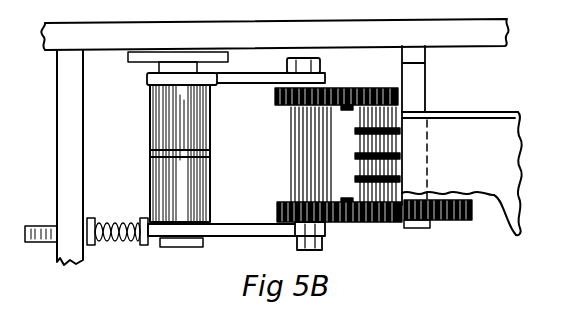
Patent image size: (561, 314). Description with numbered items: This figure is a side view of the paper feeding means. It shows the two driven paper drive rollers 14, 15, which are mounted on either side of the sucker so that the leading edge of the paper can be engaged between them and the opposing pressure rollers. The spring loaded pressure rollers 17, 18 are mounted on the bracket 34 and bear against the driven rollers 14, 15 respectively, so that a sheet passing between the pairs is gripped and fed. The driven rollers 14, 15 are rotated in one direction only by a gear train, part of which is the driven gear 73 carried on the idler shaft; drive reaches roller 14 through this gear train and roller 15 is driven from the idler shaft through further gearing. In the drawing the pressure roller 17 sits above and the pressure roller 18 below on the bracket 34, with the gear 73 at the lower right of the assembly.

The paper drive roller 14 is at (350, 88).
The paper drive roller 15 is at (345, 224).
The pressure roller 17 is at (274, 96).
The pressure roller 18 is at (280, 203).
The bracket 34 is at (226, 223).
The driven gear 73 is at (473, 206).